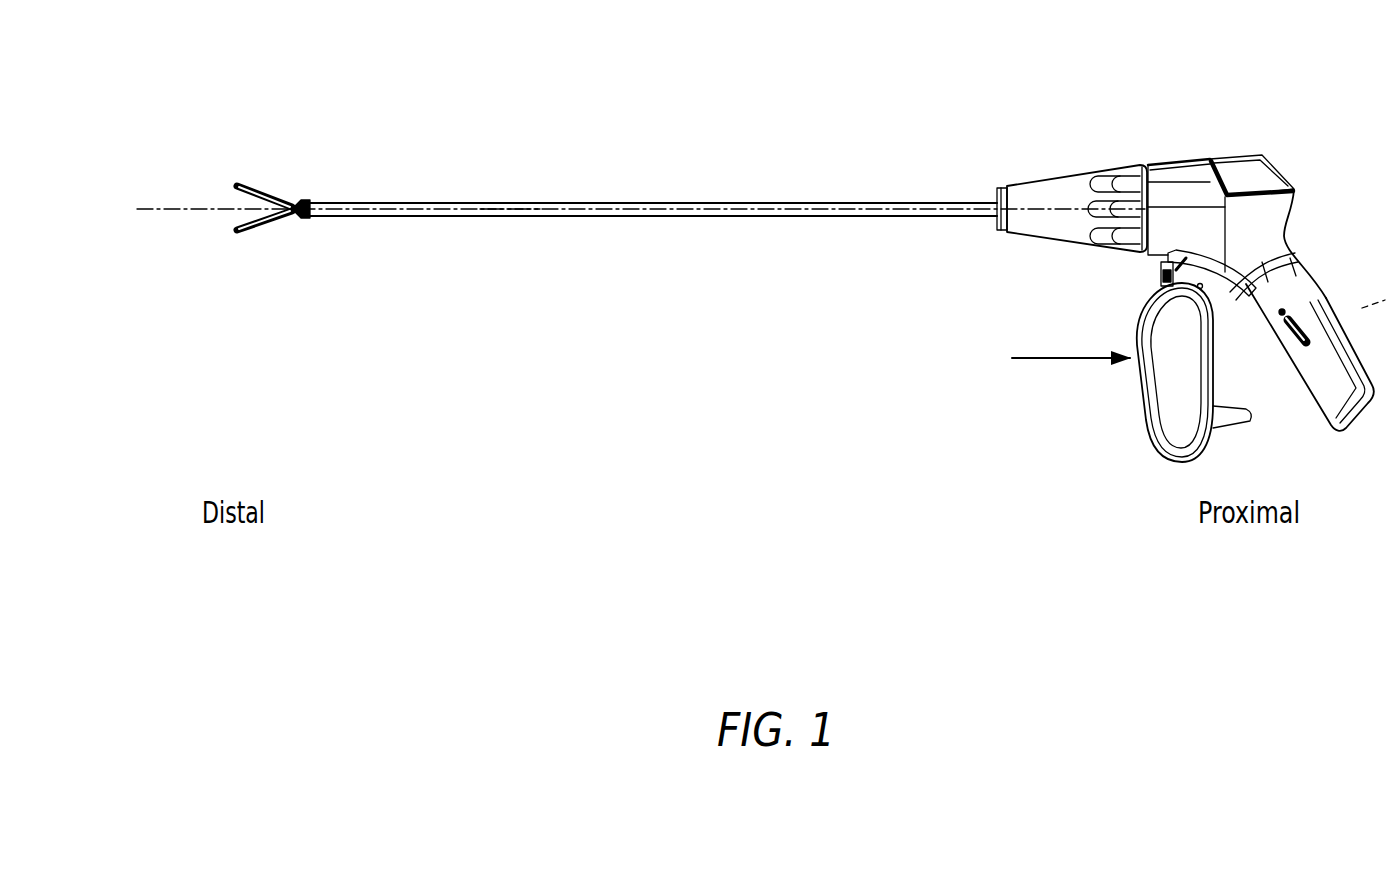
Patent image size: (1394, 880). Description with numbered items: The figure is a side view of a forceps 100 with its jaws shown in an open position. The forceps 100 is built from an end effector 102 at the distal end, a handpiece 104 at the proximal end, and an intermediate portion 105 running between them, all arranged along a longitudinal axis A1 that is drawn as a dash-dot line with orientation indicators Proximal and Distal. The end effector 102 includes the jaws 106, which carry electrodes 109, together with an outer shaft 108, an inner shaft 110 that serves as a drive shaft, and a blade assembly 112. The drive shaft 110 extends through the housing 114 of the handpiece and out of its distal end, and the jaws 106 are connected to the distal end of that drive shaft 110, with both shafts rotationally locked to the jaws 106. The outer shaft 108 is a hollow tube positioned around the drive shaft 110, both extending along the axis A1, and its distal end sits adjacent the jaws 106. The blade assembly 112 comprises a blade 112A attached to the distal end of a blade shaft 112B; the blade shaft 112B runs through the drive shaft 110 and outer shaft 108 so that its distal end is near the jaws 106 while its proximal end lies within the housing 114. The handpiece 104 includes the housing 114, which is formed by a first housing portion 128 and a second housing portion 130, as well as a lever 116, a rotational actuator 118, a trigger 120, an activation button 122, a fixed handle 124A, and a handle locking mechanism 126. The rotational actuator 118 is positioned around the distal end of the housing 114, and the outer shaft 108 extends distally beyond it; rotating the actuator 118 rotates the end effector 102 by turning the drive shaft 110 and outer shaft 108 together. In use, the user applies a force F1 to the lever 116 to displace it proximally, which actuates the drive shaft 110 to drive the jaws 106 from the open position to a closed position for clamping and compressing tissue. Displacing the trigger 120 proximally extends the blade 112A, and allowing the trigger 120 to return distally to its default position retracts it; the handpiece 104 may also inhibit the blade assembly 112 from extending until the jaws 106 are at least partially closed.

The forceps 100 is at (530, 55).
The end effector 102 is at (330, 138).
The handpiece 104 is at (1156, 100).
The intermediate portion 105 is at (590, 162).
The jaws 106 is at (270, 225).
The outer shaft 108 is at (507, 208).
The electrodes 109 is at (242, 195).
The inner shaft 110 is at (457, 217).
The blade assembly 112 is at (360, 222).
The blade 112A is at (350, 207).
The blade shaft 112B is at (613, 215).
The housing 114 is at (1180, 148).
The lever 116 is at (1155, 442).
The rotational actuator 118 is at (1055, 193).
The trigger 120 is at (1158, 288).
The activation button 122 is at (1265, 177).
The fixed handle 124A is at (1330, 405).
The handle locking mechanism 126 is at (1282, 325).
The first housing portion 128 is at (1228, 155).
The second housing portion 130 is at (1290, 245).
The longitudinal axis A1 is at (150, 208).
The force F1 is at (1072, 365).